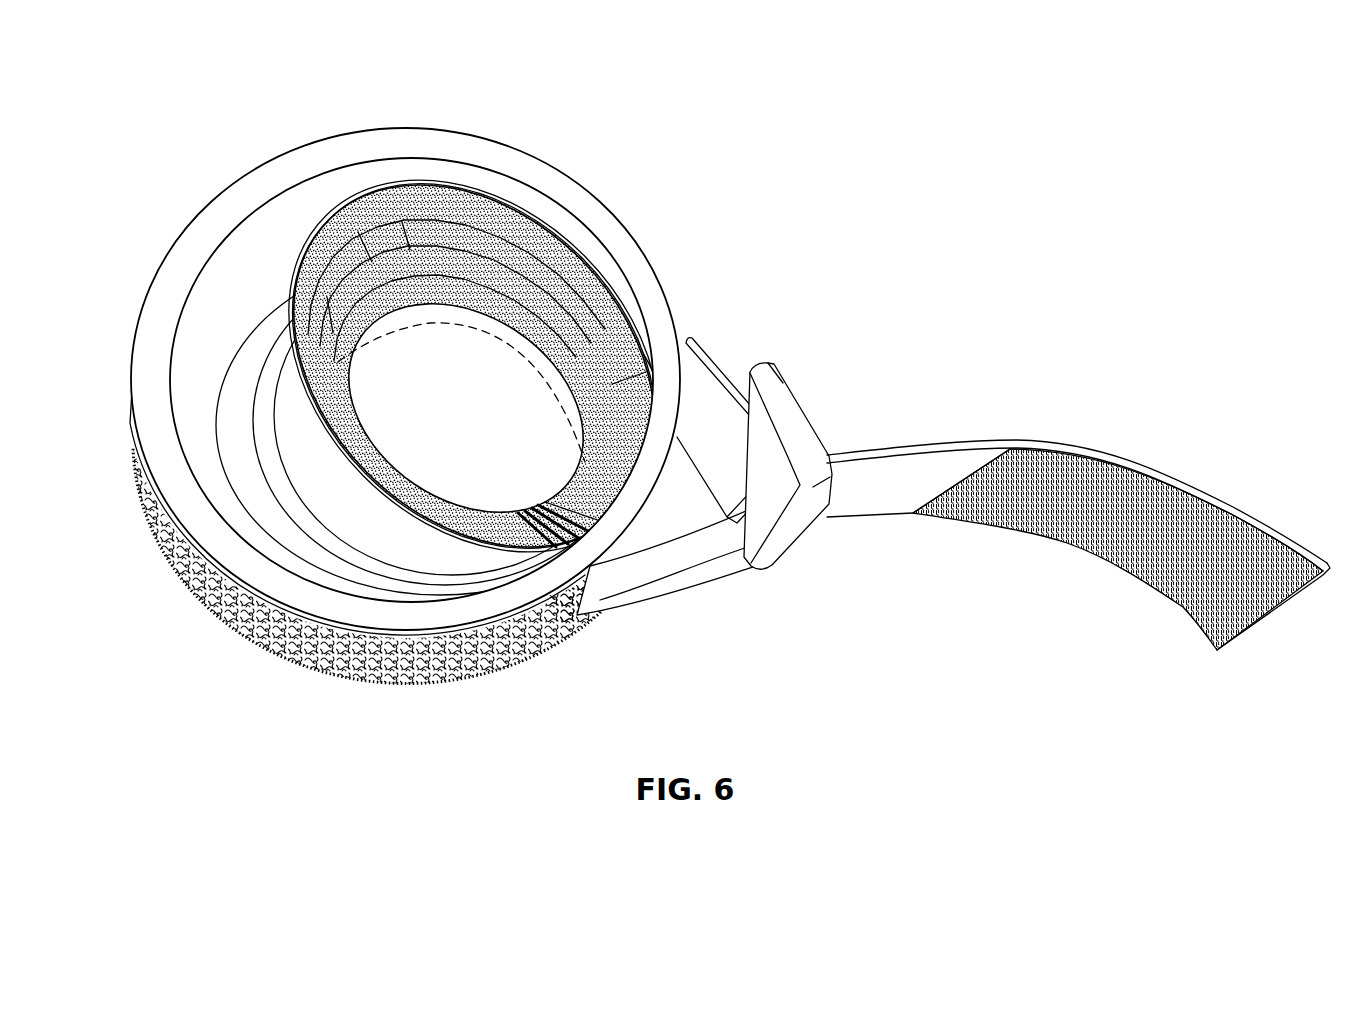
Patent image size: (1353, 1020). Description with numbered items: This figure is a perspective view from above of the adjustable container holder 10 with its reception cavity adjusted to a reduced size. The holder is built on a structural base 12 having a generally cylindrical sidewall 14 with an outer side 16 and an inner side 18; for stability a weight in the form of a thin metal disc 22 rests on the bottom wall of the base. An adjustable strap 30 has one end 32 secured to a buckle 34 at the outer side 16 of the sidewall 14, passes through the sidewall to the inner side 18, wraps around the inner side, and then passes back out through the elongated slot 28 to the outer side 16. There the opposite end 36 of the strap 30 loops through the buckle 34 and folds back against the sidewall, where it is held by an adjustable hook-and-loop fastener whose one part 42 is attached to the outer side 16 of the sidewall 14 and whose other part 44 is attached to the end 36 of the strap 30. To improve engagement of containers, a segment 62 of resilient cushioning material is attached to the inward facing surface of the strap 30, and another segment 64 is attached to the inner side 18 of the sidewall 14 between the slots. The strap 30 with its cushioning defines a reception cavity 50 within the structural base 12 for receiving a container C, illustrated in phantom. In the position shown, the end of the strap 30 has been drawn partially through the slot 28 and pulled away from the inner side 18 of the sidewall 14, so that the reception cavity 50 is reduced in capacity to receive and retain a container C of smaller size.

The adjustable container holder 10 is at (583, 99).
The structural base 12 is at (661, 276).
The cylindrical sidewall 14 is at (147, 366).
The outer side 16 is at (216, 204).
The inner side 18 is at (294, 206).
The thin metal disc 22 is at (265, 388).
The elongated slot 28 is at (578, 610).
The adjustable strap 30 is at (668, 592).
The end of strap 32 is at (735, 367).
The buckle 34 is at (800, 535).
The end of strap 36 is at (1215, 480).
The hook-and-loop fastener part 42 is at (452, 683).
The hook-and-loop fastener part 44 is at (1170, 588).
The reception cavity 50 is at (440, 441).
The cushioning material segment 62 is at (348, 417).
The cushioning material segment 64 is at (610, 470).
The container C is at (508, 346).